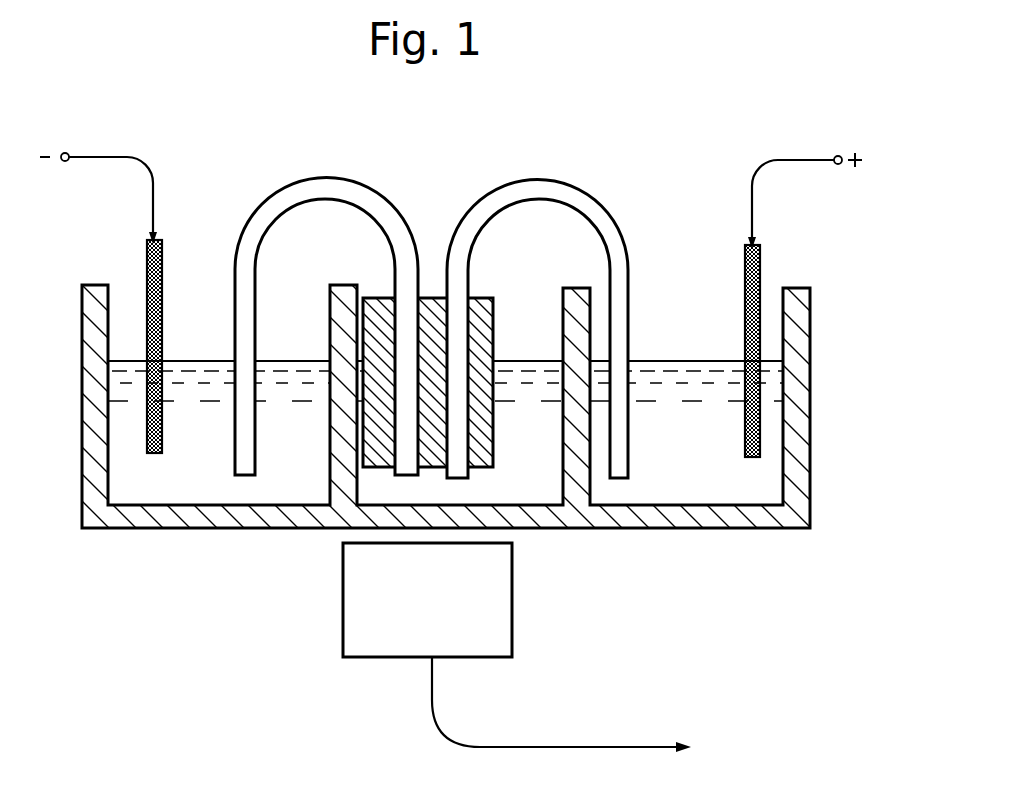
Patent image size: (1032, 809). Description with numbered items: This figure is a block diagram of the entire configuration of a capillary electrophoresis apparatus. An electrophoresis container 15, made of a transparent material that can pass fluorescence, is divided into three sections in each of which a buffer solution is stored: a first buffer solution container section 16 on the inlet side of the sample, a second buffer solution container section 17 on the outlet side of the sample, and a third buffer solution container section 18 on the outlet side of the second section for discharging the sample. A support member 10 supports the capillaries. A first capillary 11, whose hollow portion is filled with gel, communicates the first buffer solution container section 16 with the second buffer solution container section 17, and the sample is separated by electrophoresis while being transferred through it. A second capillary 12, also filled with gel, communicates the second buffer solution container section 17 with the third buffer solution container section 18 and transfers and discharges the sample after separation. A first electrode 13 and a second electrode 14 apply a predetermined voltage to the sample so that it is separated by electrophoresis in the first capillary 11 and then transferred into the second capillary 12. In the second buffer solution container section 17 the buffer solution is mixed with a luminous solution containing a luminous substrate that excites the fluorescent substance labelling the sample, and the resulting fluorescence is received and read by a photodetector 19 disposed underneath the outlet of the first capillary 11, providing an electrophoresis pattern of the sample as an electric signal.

The support member 10 is at (427, 298).
The first capillary 11 is at (290, 187).
The second capillary 12 is at (564, 182).
The first electrode 13 is at (147, 262).
The second electrode 14 is at (760, 262).
The electrophoresis container 15 is at (812, 332).
The first buffer solution container section 16 is at (195, 365).
The second buffer solution container section 17 is at (530, 352).
The third buffer solution container section 18 is at (696, 356).
The photodetector 19 is at (343, 597).